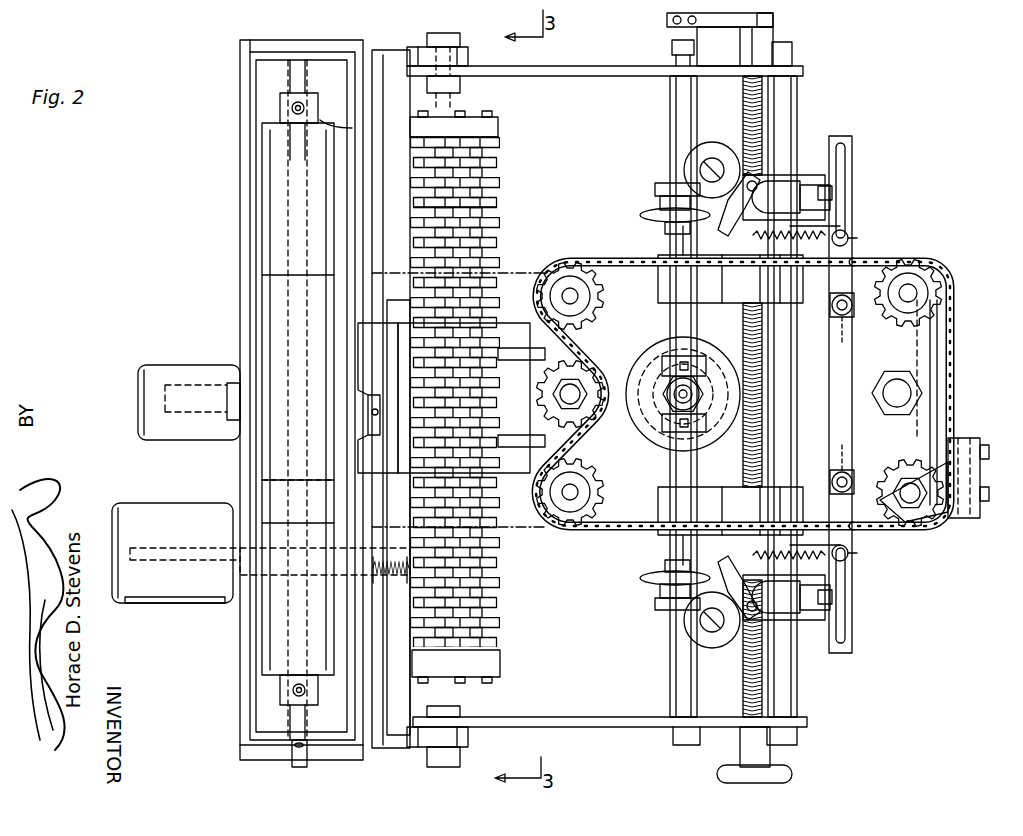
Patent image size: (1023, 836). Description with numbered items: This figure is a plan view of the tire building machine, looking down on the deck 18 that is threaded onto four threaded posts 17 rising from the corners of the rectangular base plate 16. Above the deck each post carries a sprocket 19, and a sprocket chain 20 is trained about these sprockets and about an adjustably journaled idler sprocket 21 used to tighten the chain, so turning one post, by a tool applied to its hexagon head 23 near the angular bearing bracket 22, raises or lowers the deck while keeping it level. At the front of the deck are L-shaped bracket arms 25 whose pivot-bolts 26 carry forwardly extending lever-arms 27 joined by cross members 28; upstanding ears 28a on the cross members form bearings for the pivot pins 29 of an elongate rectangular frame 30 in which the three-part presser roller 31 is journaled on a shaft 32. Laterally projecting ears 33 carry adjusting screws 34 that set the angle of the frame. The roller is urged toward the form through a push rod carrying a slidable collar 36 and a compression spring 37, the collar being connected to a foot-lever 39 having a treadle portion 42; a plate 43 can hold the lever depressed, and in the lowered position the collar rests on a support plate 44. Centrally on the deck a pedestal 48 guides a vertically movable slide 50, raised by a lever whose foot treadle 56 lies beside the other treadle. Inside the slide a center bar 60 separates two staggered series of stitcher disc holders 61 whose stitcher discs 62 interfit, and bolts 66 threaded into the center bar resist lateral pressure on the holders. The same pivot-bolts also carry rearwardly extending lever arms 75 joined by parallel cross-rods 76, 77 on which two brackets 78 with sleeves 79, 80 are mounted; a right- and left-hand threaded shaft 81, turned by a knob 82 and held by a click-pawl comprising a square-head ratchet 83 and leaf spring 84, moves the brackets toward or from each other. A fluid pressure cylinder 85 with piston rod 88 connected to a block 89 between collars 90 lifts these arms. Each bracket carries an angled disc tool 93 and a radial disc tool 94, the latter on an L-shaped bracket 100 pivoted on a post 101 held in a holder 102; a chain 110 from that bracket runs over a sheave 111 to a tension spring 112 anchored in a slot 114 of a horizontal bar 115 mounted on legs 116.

The base plate 16 is at (952, 332).
The threaded posts 17 is at (562, 262).
The deck 18 is at (938, 349).
The sprockets 19 is at (590, 300).
The sprocket chain 20 is at (925, 393).
The idler sprocket 21 is at (584, 424).
The bearing bracket 22 is at (975, 516).
The hexagon head 23 is at (912, 518).
The bracket arms 25 is at (470, 58).
The pivot-bolts 26 is at (444, 34).
The lever-arms 27 is at (300, 40).
The cross members 28 is at (240, 45).
The upstanding ears 28a is at (358, 395).
The pivot pins 29 is at (228, 410).
The rectangular frame 30 is at (250, 232).
The presser roller 31 is at (266, 628).
The shaft 32 is at (292, 762).
The laterally projecting ears 33 is at (315, 100).
The adjusting screws 34 is at (352, 124).
The slidable collar 36 is at (385, 600).
The compression spring 37 is at (392, 586).
The foot-lever 39 is at (165, 545).
The treadle portion 42 is at (146, 603).
The plate 43 is at (232, 505).
The support plate 44 is at (388, 590).
The pedestal 48 is at (500, 322).
The slide 50 is at (478, 122).
The foot treadle 56 is at (138, 380).
The center bar 60 is at (468, 665).
The stitcher disc holders 61 is at (496, 207).
The stitcher discs 62 is at (500, 165).
The bolts 66 is at (410, 280).
The lever arms 75 is at (590, 66).
The cross-rod 76 is at (670, 120).
The cross-rod 77 is at (797, 106).
The brackets 78 is at (666, 303).
The sleeve 79 is at (670, 245).
The sleeve 80 is at (833, 308).
The shaft 81 is at (743, 456).
The knob 82 is at (792, 772).
The square-head ratchet 83 is at (773, 19).
The leaf spring 84 is at (722, 27).
The fluid pressure cylinder 85 is at (650, 412).
The piston rod 88 is at (674, 404).
The block 89 is at (664, 390).
The collars 90 is at (662, 366).
The tool 93 is at (645, 212).
The tool 94 is at (714, 142).
The L-shaped bracket 100 is at (752, 178).
The post 101 is at (788, 186).
The holder 102 is at (826, 206).
The chain 110 is at (828, 234).
The sheave 111 is at (846, 227).
The tension spring 112 is at (850, 241).
The slot 114 is at (846, 158).
The horizontal bar 115 is at (829, 392).
The legs 116 is at (842, 330).